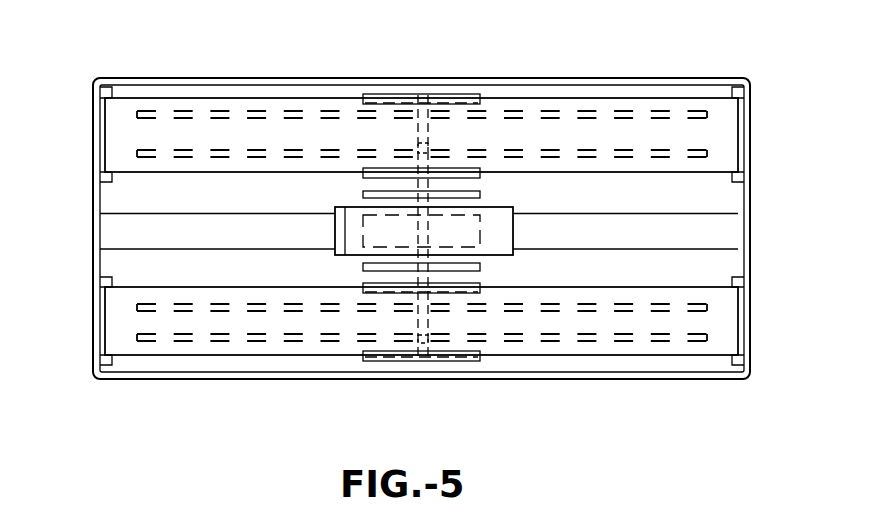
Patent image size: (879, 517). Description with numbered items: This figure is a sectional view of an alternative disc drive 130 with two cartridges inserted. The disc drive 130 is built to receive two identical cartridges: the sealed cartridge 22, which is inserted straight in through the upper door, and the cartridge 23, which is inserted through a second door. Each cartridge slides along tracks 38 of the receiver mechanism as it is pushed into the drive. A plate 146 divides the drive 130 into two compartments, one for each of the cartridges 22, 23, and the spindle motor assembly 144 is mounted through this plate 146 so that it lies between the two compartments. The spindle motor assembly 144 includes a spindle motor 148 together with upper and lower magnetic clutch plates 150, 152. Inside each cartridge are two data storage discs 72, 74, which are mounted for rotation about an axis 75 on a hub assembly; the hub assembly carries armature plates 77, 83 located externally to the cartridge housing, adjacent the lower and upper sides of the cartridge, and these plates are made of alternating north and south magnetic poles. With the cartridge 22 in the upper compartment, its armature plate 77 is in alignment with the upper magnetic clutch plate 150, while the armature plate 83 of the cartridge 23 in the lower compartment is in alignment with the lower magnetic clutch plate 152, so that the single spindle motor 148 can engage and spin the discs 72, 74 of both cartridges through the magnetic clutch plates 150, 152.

The sealed cartridge 22 is at (658, 92).
The cartridge 23 is at (668, 284).
The tracks 38 is at (106, 174).
The data storage disc 72 is at (178, 110).
The data storage disc 74 is at (247, 152).
The axis 75 is at (428, 124).
The armature plate 77 is at (387, 170).
The armature plate 83 is at (474, 285).
The disc drive 130 is at (638, 70).
The spindle motor assembly 144 is at (606, 197).
The plate 146 is at (125, 249).
The spindle motor 148 is at (513, 232).
The upper magnetic clutch plate 150 is at (363, 195).
The lower magnetic clutch plate 152 is at (363, 267).